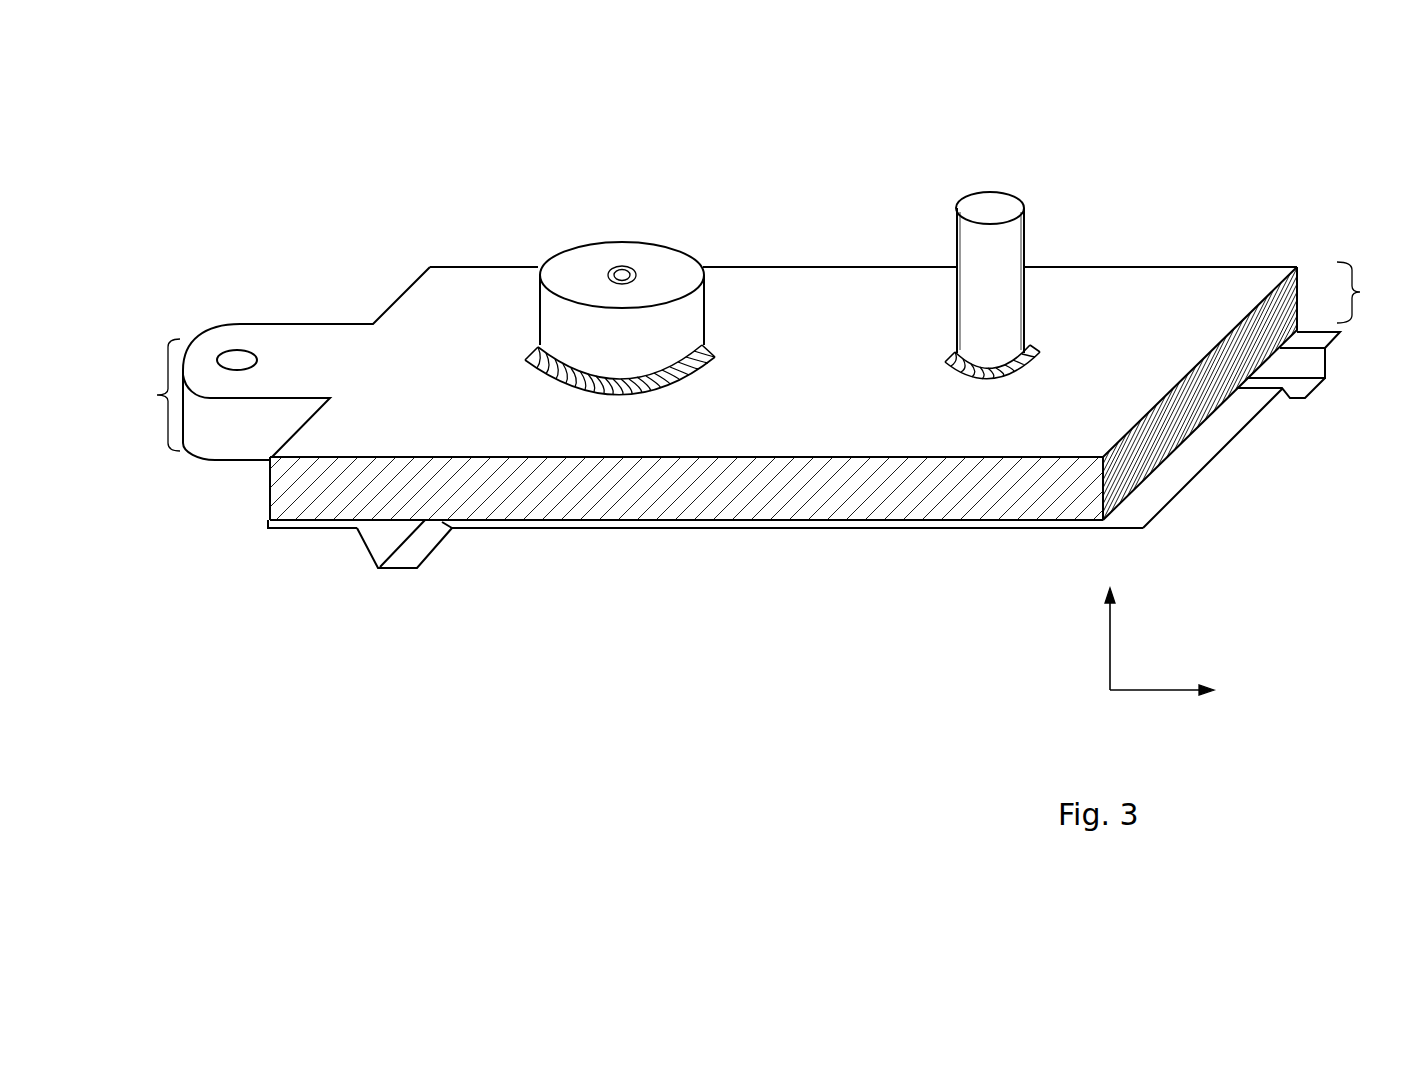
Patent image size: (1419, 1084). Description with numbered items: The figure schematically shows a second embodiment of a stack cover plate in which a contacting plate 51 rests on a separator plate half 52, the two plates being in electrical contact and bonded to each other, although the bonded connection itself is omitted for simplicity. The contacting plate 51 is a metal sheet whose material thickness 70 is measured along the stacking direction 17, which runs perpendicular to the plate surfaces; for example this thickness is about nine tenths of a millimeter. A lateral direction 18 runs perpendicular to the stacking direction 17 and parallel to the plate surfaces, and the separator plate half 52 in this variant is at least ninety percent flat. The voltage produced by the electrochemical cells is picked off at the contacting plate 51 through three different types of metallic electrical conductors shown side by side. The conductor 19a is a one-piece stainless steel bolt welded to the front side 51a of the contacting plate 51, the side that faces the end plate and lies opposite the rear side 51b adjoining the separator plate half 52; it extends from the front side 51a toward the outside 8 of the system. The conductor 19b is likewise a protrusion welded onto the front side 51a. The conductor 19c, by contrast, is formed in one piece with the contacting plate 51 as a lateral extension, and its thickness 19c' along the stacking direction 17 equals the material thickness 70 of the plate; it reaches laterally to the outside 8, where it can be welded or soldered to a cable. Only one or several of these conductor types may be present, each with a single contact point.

The outside of the system 8 is at (158, 212).
The stacking direction 17 is at (1112, 653).
The lateral direction 18 is at (1167, 690).
The metallic electrical conductor 19a is at (1022, 250).
The metallic electrical conductor 19b is at (648, 240).
The metallic electrical conductor 19c is at (306, 351).
The thickness of the conductor 19c' is at (144, 395).
The contacting plate 51 is at (1188, 260).
The front side of the contacting plate 51a is at (820, 287).
The rear side of the contacting plate 51b is at (698, 520).
The separator plate half 52 is at (1237, 437).
The material thickness 70 is at (1360, 292).